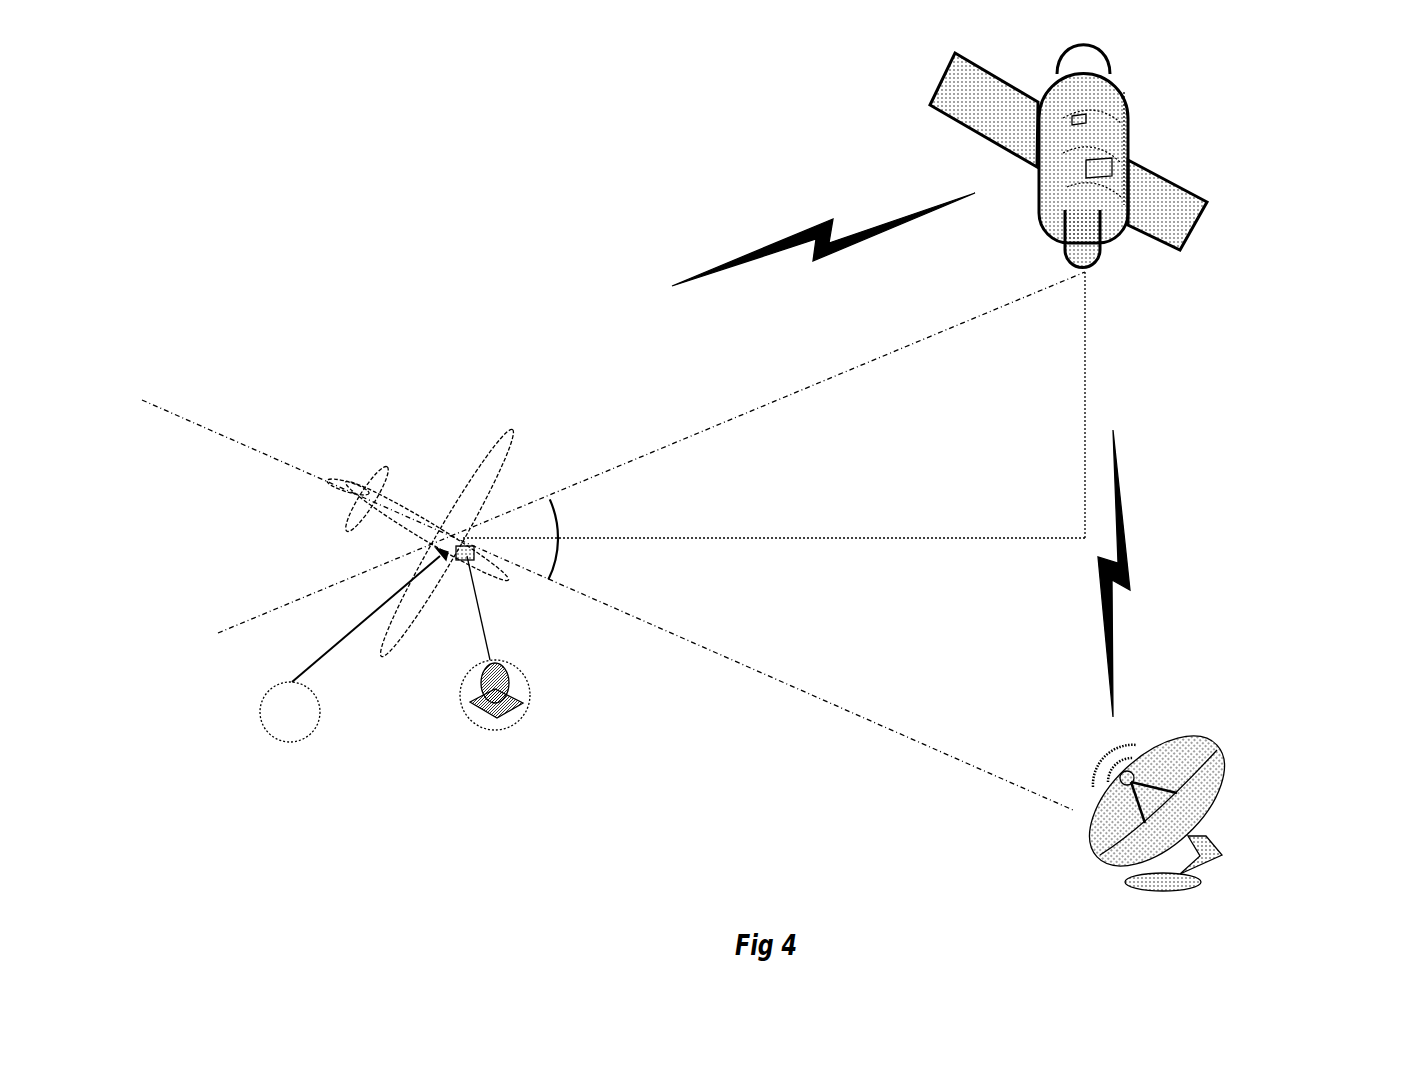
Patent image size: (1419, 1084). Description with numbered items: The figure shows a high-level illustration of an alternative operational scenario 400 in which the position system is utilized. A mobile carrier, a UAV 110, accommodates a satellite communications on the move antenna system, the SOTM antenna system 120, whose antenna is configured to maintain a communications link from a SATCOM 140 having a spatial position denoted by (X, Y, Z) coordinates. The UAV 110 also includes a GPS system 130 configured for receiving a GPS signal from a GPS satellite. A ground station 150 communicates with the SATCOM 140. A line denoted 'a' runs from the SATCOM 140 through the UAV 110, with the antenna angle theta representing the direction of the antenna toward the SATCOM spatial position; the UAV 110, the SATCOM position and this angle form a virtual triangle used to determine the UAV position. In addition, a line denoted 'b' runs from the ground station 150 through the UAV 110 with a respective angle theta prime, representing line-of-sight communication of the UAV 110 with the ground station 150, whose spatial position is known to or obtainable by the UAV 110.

The operational scenario 400 is at (613, 492).
The UAV 110 is at (424, 543).
The SOTM antenna system 120 is at (495, 672).
The GPS system 130 is at (354, 645).
The SATCOM 140 is at (975, 381).
The ground station 150 is at (1214, 801).